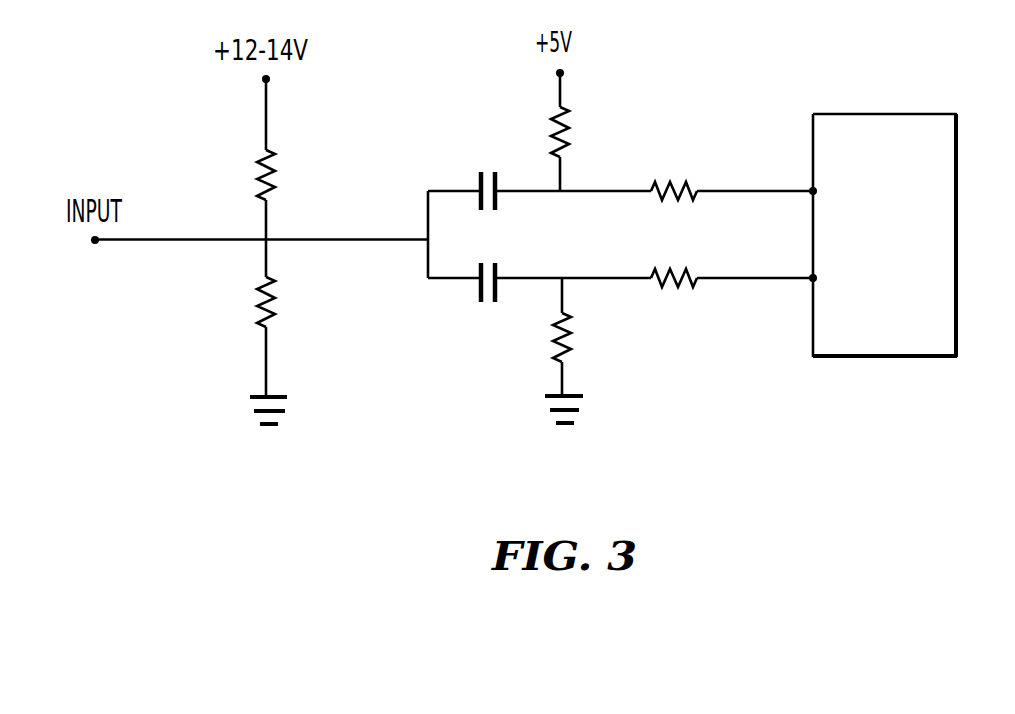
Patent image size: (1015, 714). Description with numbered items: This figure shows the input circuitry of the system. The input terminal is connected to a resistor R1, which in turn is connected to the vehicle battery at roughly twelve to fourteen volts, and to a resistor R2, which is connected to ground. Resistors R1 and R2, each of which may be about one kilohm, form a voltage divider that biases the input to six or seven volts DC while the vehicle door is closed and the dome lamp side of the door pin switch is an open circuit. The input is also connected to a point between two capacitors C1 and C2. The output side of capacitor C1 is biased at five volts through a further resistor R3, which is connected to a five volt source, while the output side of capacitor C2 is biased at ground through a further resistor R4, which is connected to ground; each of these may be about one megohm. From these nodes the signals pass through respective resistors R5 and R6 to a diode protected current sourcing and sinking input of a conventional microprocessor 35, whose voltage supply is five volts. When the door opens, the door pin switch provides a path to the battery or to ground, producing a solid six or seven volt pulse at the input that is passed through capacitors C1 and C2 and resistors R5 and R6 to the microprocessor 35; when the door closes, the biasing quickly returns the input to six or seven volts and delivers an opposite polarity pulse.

The resistor R1 is at (245, 175).
The resistor R2 is at (247, 302).
The further resistor R3 is at (579, 132).
The further resistor R4 is at (582, 337).
The resistor R5 is at (674, 170).
The resistor R6 is at (674, 299).
The capacitor C1 is at (486, 169).
The capacitor C2 is at (488, 305).
The microprocessor 35 is at (957, 169).